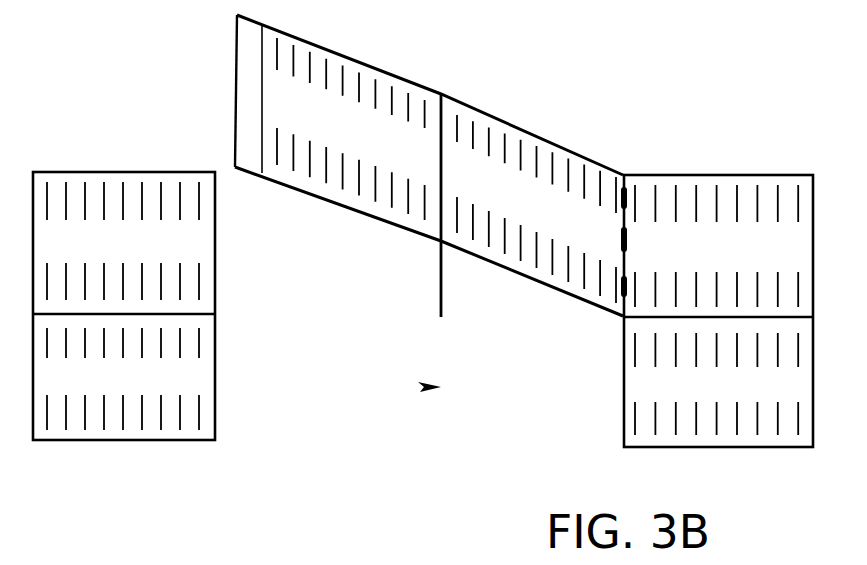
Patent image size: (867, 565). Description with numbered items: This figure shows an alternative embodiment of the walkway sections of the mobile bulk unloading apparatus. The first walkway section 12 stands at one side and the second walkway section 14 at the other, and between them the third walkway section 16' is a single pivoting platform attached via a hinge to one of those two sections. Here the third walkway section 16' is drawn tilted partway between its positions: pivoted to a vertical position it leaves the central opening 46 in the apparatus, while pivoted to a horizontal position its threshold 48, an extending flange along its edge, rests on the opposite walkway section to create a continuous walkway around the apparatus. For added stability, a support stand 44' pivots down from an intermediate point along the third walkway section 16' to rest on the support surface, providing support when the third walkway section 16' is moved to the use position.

The first walkway section 12 is at (132, 178).
The second walkway section 14 is at (745, 180).
The third walkway section 16' is at (429, 165).
The support stand 44' is at (480, 224).
The central opening 46 is at (430, 390).
The threshold 48 is at (248, 155).